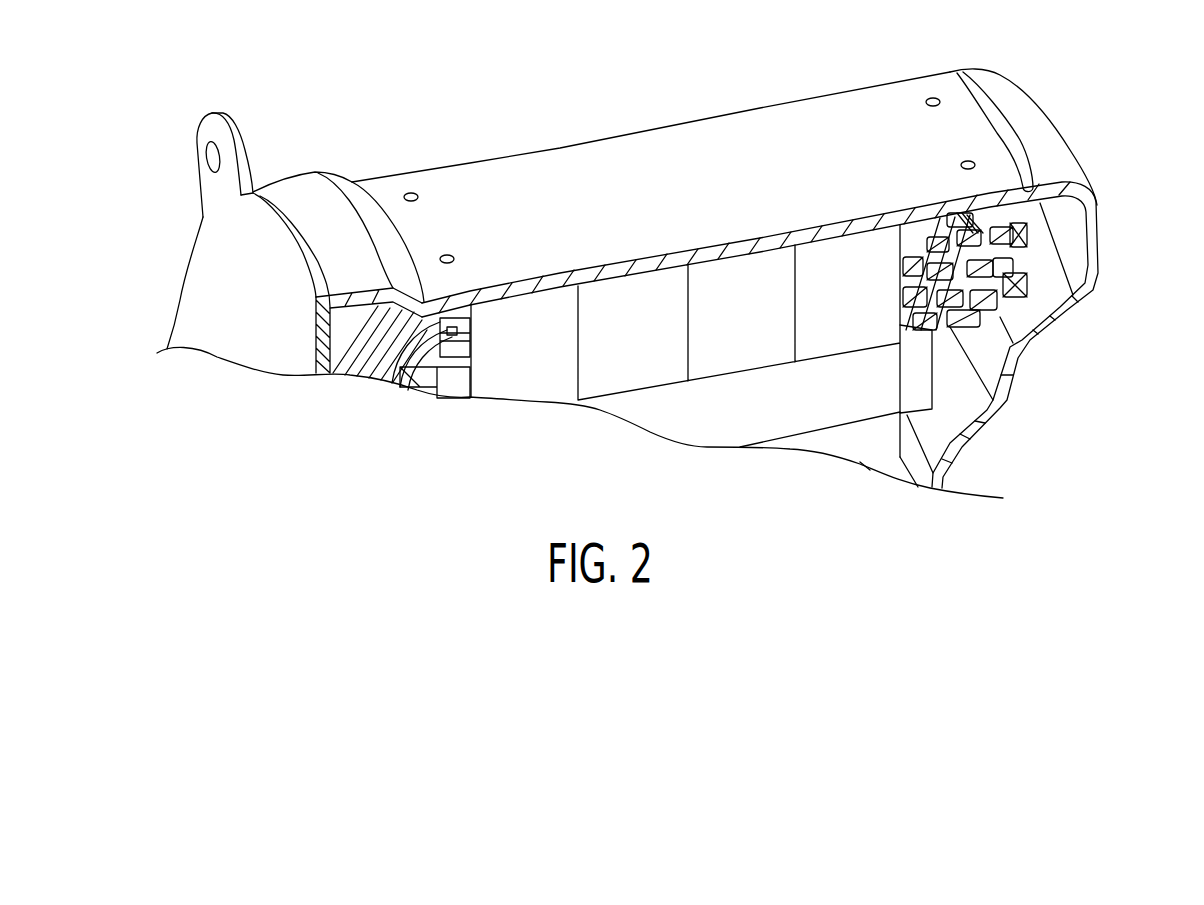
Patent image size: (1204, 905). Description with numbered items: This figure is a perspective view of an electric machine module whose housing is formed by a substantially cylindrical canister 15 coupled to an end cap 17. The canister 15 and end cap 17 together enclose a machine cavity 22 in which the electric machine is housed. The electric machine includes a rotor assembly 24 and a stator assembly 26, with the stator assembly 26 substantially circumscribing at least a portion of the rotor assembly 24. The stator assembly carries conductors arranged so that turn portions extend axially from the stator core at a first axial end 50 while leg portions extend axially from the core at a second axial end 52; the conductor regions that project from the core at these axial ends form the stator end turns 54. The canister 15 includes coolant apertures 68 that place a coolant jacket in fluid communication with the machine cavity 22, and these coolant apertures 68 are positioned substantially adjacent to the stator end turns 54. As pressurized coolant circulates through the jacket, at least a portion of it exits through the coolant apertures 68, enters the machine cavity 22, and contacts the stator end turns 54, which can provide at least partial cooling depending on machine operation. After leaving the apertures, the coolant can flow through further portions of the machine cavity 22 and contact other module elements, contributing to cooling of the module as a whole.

The canister 15 is at (1078, 300).
The end cap 17 is at (232, 253).
The machine cavity 22 is at (957, 369).
The rotor assembly 24 is at (800, 394).
The stator assembly 26 is at (620, 365).
The first axial end 50 is at (452, 314).
The second axial end 52 is at (963, 240).
The stator end turns 54 is at (1027, 270).
The coolant apertures 68 is at (968, 163).